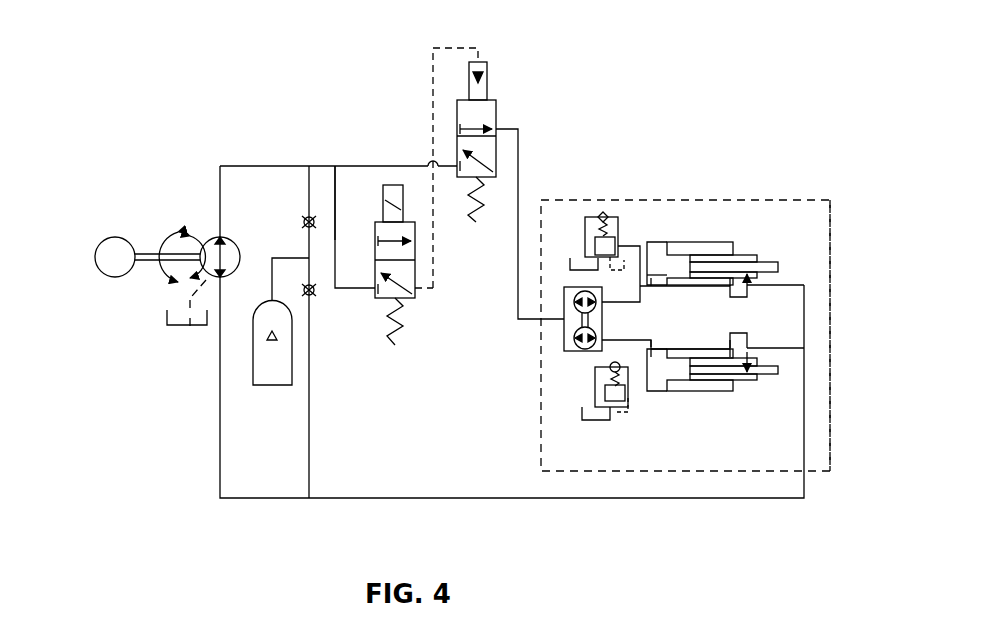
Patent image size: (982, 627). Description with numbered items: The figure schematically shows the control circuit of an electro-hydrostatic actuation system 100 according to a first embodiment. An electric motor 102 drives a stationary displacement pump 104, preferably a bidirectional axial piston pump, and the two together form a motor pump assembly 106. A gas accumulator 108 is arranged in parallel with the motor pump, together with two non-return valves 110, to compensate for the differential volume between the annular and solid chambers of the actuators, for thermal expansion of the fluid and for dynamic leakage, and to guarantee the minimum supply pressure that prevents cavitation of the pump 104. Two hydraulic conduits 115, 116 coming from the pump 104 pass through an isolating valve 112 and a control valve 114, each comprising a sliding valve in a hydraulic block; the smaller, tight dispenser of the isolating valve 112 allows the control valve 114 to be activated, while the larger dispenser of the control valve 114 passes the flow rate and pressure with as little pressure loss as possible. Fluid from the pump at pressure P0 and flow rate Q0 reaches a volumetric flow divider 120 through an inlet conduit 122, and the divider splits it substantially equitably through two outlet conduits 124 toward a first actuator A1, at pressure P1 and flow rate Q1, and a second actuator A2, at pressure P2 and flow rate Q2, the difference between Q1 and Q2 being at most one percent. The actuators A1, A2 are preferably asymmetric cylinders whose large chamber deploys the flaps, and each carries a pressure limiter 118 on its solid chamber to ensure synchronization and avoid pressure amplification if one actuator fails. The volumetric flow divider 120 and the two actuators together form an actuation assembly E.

The actuation system 100 is at (120, 478).
The electric motor 102 is at (112, 278).
The stationary displacement pump 104 is at (212, 238).
The motor pump assembly 106 is at (133, 181).
The gas accumulator 108 is at (270, 390).
The non-return valve 110 is at (300, 214).
The isolating valve 112 is at (399, 362).
The control valve 114 is at (504, 67).
The hydraulic conduit 115 is at (340, 166).
The hydraulic conduit 116 is at (338, 205).
The pressure limiter 118 is at (613, 212).
The volumetric flow divider 120 is at (565, 357).
The inlet conduit 122 is at (519, 210).
The outlet conduit 124 is at (612, 302).
The first actuator A1 is at (812, 222).
The second actuator A2 is at (729, 407).
The actuation assembly E is at (837, 297).